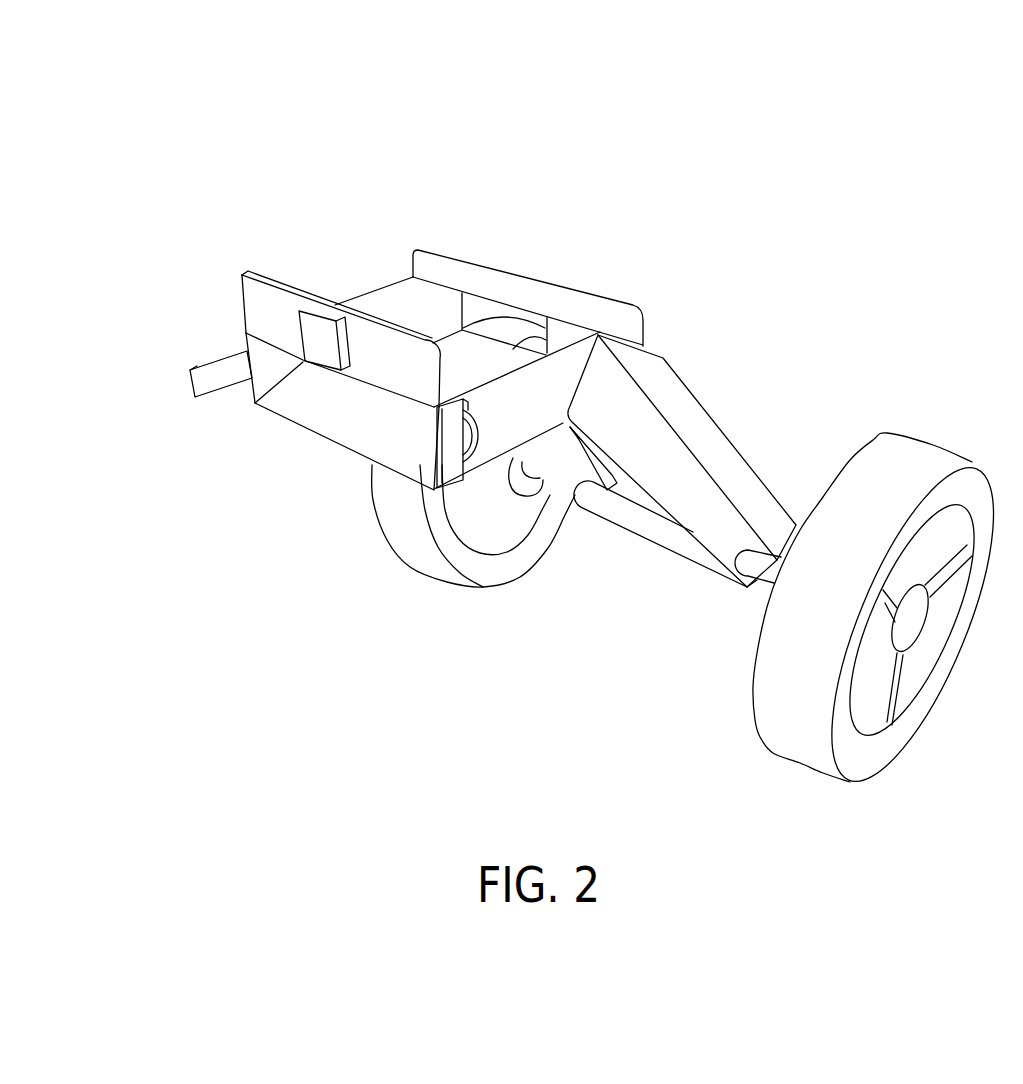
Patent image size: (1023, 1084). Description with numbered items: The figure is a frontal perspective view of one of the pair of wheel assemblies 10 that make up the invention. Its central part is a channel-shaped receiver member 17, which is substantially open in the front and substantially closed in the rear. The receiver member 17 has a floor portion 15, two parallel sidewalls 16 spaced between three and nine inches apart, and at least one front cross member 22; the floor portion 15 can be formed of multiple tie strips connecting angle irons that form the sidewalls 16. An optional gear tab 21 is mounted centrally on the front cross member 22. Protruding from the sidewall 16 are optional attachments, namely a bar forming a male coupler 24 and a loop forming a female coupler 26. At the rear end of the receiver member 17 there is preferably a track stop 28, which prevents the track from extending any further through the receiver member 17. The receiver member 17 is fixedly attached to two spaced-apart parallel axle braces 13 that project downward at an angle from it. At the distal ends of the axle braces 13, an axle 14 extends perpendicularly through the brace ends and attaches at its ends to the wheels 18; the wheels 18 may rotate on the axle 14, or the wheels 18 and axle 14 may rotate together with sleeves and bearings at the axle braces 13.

The wheel assembly 10 is at (653, 225).
The axle brace 13 is at (698, 411).
The axle 14 is at (648, 518).
The floor portion 15 is at (357, 432).
The sidewall 16 is at (267, 372).
The receiver member 17 is at (272, 453).
The wheel 18 is at (802, 743).
The gear tab 21 is at (322, 337).
The front cross member 22 is at (273, 322).
The male coupler 24 is at (197, 368).
The female coupler 26 is at (440, 435).
The track stop 28 is at (562, 332).